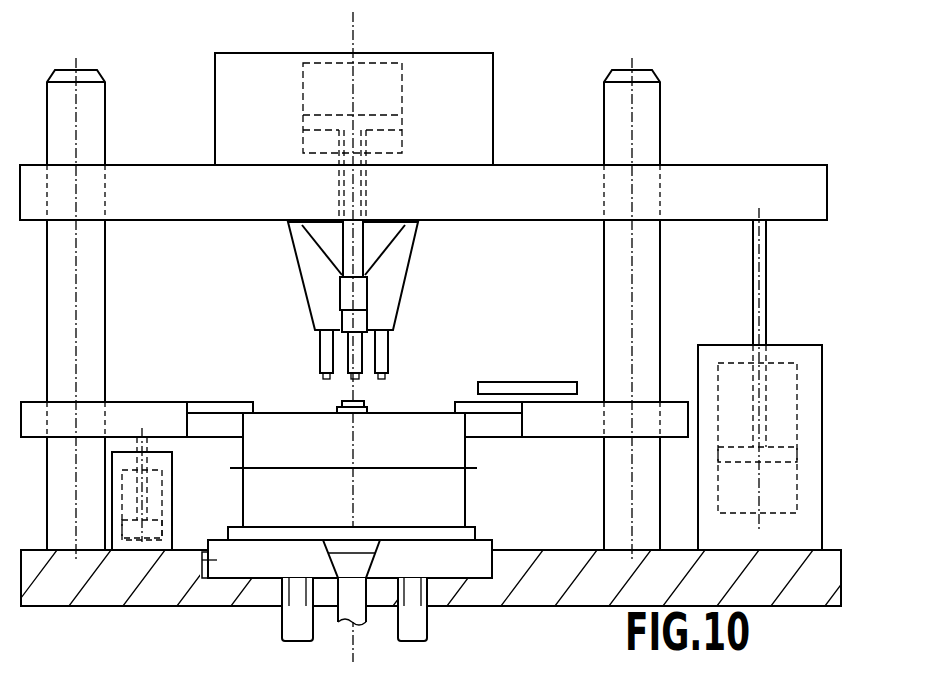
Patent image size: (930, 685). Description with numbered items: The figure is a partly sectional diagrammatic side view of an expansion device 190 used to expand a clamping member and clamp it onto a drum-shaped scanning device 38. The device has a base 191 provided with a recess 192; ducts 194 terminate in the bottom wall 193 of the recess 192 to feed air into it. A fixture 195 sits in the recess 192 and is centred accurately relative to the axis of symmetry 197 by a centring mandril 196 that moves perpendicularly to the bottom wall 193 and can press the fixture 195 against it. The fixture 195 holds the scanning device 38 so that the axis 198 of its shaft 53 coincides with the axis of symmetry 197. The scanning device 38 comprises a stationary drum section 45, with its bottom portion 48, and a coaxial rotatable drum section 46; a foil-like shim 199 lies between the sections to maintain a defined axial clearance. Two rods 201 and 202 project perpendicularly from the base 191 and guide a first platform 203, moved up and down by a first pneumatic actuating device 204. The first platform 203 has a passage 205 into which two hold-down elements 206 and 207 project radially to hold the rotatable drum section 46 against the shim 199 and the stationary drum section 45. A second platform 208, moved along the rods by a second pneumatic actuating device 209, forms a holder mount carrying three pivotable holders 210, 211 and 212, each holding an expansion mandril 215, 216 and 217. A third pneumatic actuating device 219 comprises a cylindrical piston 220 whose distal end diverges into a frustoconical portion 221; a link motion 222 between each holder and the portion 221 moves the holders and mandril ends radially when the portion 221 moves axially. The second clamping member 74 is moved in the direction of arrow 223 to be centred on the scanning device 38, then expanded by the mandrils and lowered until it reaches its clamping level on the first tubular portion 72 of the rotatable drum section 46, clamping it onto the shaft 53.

The expansion device 190 is at (712, 85).
The base 191 is at (97, 598).
The recess 192 is at (497, 580).
The bottom wall 193 is at (223, 580).
The ducts 194 is at (290, 612).
The fixture 195 is at (200, 562).
The centring mandril 196 is at (357, 618).
The axis of symmetry 197 is at (355, 42).
The axis of the shaft 198 is at (355, 492).
The foil-like shim 199 is at (233, 468).
The rod 201 is at (100, 137).
The rod 202 is at (656, 137).
The first platform 203 is at (120, 403).
The first pneumatic actuating device 204 is at (240, 520).
The passage 205 is at (197, 408).
The hold-down element 206 is at (230, 405).
The hold-down element 207 is at (466, 404).
The second platform 208 is at (738, 170).
The second pneumatic actuating device 209 is at (845, 323).
The holder 210 is at (300, 259).
The holder 211 is at (362, 322).
The holder 212 is at (400, 243).
The expansion mandril 215 is at (325, 347).
The expansion mandril 216 is at (348, 360).
The expansion mandril 217 is at (383, 350).
The third pneumatic actuating device 219 is at (550, 98).
The cylindrical piston 220 is at (343, 236).
The frustoconical portion 221 is at (360, 300).
The link motion 222 is at (336, 292).
The arrow 223 is at (427, 385).
The drum-shaped scanning device 38 is at (382, 470).
The stationary drum section 45 is at (468, 497).
The rotatable drum section 46 is at (468, 450).
The bottom portion 48 is at (470, 533).
The shaft 53 is at (340, 399).
The first tubular portion 72 is at (367, 408).
The second clamping member 74 is at (590, 369).